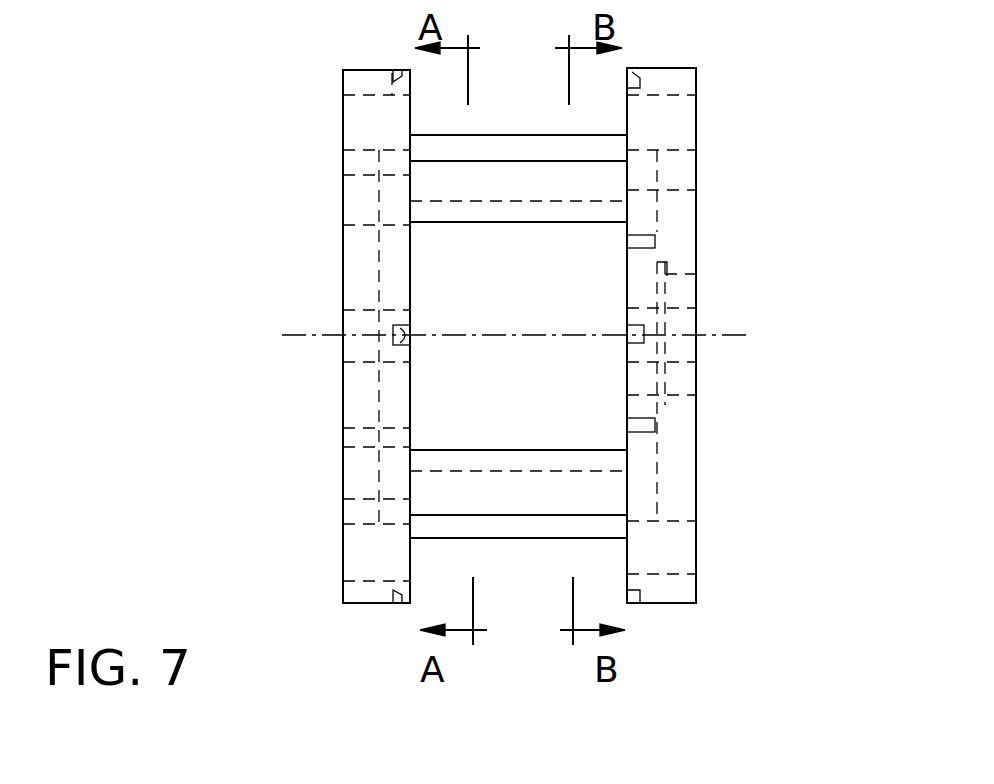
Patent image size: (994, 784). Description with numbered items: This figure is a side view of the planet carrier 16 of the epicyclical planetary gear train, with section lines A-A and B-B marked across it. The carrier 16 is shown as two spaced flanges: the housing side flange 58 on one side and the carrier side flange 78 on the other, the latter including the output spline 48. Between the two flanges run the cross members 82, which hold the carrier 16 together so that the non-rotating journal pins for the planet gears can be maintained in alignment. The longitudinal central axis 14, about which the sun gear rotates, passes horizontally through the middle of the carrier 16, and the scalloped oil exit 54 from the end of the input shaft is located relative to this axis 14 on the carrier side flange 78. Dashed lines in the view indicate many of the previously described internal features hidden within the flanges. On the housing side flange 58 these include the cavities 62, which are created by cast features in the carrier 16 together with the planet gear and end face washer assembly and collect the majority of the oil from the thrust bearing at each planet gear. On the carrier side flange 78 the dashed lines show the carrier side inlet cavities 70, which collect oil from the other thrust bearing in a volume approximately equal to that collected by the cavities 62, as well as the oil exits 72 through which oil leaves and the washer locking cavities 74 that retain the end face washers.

The longitudinal central axis 14 is at (716, 337).
The planet carrier 16 is at (758, 570).
The output spline 48 is at (672, 276).
The scalloped oil exit 54 is at (665, 282).
The housing side flange 58 is at (343, 470).
The cavity 62 is at (372, 240).
The carrier side inlet cavity 70 is at (696, 190).
The oil exit 72 is at (402, 70).
The washer locking cavity 74 is at (632, 82).
The carrier side flange 78 is at (697, 421).
The cross member 82 is at (520, 225).